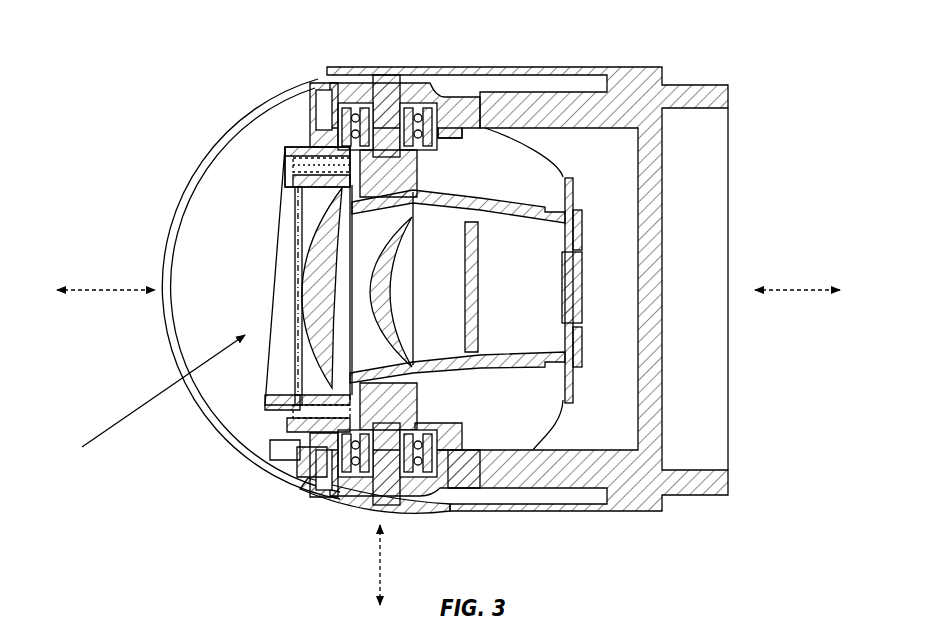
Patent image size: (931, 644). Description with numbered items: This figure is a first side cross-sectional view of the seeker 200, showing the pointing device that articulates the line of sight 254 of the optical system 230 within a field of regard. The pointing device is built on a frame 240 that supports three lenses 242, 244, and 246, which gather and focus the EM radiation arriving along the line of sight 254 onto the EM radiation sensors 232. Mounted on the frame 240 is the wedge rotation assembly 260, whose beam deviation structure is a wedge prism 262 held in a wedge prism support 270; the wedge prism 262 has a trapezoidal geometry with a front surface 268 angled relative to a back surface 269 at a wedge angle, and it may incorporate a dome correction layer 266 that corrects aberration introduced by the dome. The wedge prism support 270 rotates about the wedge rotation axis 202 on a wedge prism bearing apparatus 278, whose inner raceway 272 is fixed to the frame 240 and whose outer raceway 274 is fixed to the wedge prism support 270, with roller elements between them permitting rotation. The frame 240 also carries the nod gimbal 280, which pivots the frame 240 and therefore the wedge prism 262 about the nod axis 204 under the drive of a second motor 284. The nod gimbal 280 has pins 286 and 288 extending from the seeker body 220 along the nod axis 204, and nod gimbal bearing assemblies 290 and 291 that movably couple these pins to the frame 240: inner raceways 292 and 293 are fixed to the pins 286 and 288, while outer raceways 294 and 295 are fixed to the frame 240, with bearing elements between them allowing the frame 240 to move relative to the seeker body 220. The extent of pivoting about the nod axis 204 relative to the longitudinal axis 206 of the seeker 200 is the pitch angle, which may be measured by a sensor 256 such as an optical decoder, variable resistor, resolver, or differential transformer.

The seeker 200 is at (148, 64).
The wedge rotation axis 202 is at (100, 290).
The nod axis 204 is at (370, 568).
The longitudinal axis 206 is at (796, 290).
The seeker body 220 is at (585, 100).
The optical system 230 is at (518, 412).
The EM radiation sensors 232 is at (575, 305).
The frame 240 is at (405, 175).
The lens 242 is at (322, 240).
The lens 244 is at (412, 335).
The lens 246 is at (479, 283).
The line of sight 254 is at (140, 410).
The sensor 256 is at (318, 142).
The wedge rotation assembly 260 is at (297, 128).
The wedge prism 262 is at (284, 262).
The dome correction layer 266 is at (300, 200).
The front surface 268 is at (272, 318).
The back surface 269 is at (300, 293).
The wedge prism support 270 is at (312, 148).
The inner raceway 272 is at (298, 395).
The outer raceway 274 is at (300, 460).
The wedge prism bearing apparatus 278 is at (283, 425).
The nod gimbal 280 is at (452, 153).
The second motor 284 is at (515, 440).
The pin 286 is at (387, 107).
The pin 288 is at (392, 478).
The nod gimbal bearing assembly 290 is at (320, 128).
The nod gimbal bearing assembly 291 is at (326, 490).
The inner raceway 292 is at (356, 104).
The inner raceway 293 is at (427, 492).
The outer raceway 294 is at (336, 112).
The outer raceway 295 is at (353, 478).